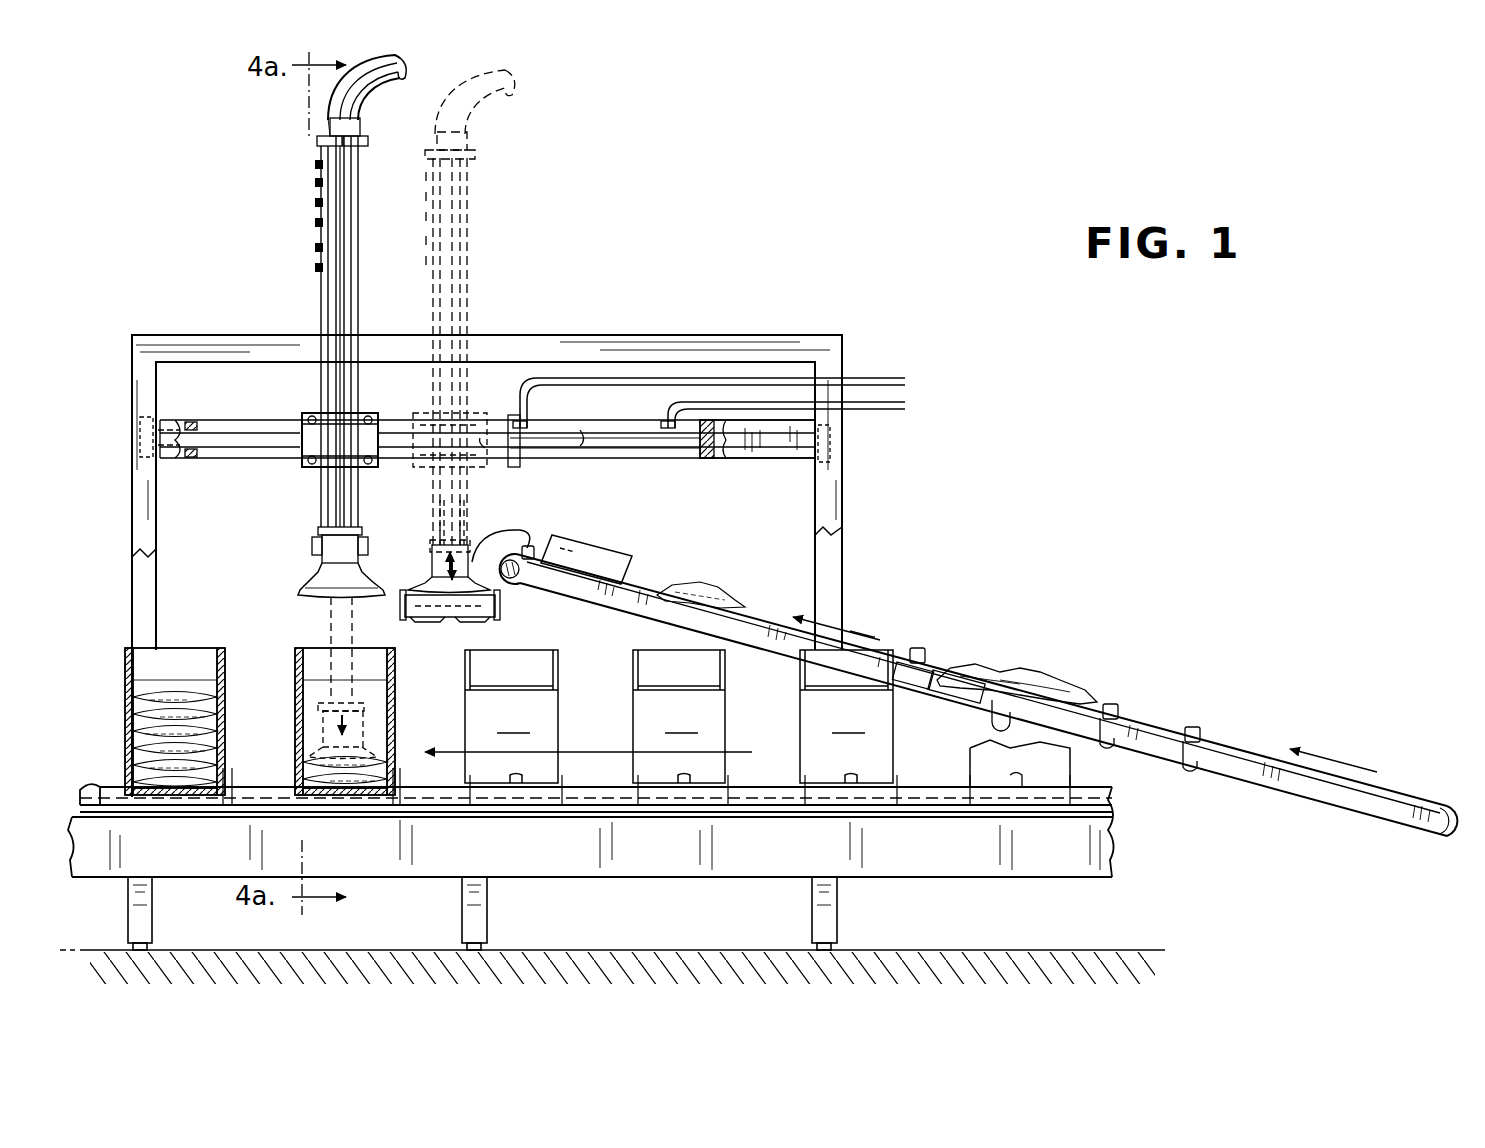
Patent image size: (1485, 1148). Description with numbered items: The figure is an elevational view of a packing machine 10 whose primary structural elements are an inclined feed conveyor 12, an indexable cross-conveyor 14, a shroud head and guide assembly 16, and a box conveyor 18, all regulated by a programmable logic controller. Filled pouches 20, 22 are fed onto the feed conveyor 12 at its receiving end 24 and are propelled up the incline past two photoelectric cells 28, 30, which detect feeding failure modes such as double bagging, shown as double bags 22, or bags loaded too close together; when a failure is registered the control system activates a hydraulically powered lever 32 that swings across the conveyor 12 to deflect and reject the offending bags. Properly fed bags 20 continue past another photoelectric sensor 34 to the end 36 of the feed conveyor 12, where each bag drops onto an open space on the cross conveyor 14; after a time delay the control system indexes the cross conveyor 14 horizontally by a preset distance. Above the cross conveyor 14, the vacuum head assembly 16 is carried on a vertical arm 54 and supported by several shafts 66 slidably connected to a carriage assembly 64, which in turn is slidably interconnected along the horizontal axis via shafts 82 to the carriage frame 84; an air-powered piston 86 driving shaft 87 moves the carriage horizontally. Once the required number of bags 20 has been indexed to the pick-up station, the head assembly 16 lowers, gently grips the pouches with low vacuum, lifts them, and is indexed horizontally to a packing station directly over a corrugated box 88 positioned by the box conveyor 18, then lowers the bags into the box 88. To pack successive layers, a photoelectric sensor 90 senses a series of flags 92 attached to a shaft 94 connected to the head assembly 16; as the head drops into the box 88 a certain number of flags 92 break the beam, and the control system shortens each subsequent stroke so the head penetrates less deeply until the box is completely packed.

The packing machine 10 is at (802, 332).
The inclined feed conveyor 12 is at (1272, 750).
The indexable cross-conveyor 14 is at (503, 607).
The shroud head and guide assembly 16 is at (315, 546).
The box conveyor 18 is at (110, 787).
The filled pouches 20 is at (413, 585).
The double bags 22 is at (1075, 680).
The receiving end 24 is at (1460, 812).
The photoelectric cell 28 is at (1198, 730).
The photoelectric cell 30 is at (1118, 708).
The lever 32 is at (924, 650).
The photoelectric sensor 34 is at (530, 546).
The end of the feed conveyor 36 is at (498, 556).
The vertical arm 54 is at (358, 222).
The carriage assembly 64 is at (425, 412).
The shafts 66 is at (342, 282).
The shafts 82 is at (217, 433).
The carriage frame 84 is at (737, 452).
The air-powered piston 86 is at (630, 428).
The shaft 87 is at (443, 442).
The corrugated box 88 is at (125, 660).
The photoelectric sensor 90 is at (310, 412).
The flags 92 is at (316, 222).
The shaft 94 is at (322, 301).